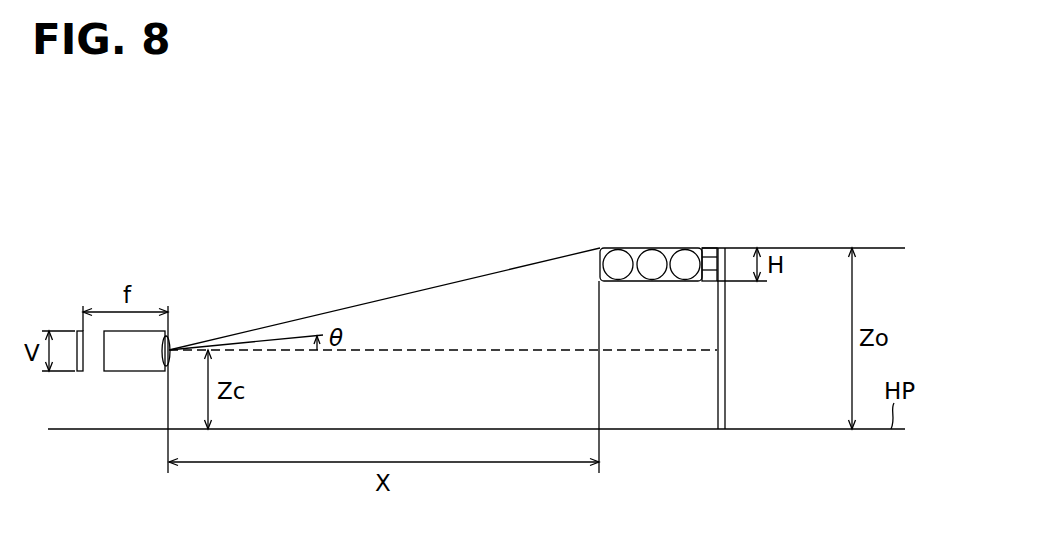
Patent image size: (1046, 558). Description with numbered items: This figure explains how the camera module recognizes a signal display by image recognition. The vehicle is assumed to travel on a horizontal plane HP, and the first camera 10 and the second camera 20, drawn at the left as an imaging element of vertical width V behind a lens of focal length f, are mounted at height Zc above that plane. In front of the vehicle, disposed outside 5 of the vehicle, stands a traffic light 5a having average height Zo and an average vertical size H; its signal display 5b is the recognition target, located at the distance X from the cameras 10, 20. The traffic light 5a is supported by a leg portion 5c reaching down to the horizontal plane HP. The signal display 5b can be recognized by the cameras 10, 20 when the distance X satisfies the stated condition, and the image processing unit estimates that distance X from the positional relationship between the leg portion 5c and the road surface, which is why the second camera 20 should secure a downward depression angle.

The first camera 10 is at (89, 372).
The second camera 20 is at (133, 373).
The outside of the vehicle 5 is at (465, 227).
The traffic light 5a is at (712, 228).
The signal display 5b is at (638, 248).
The leg portion 5c is at (726, 387).